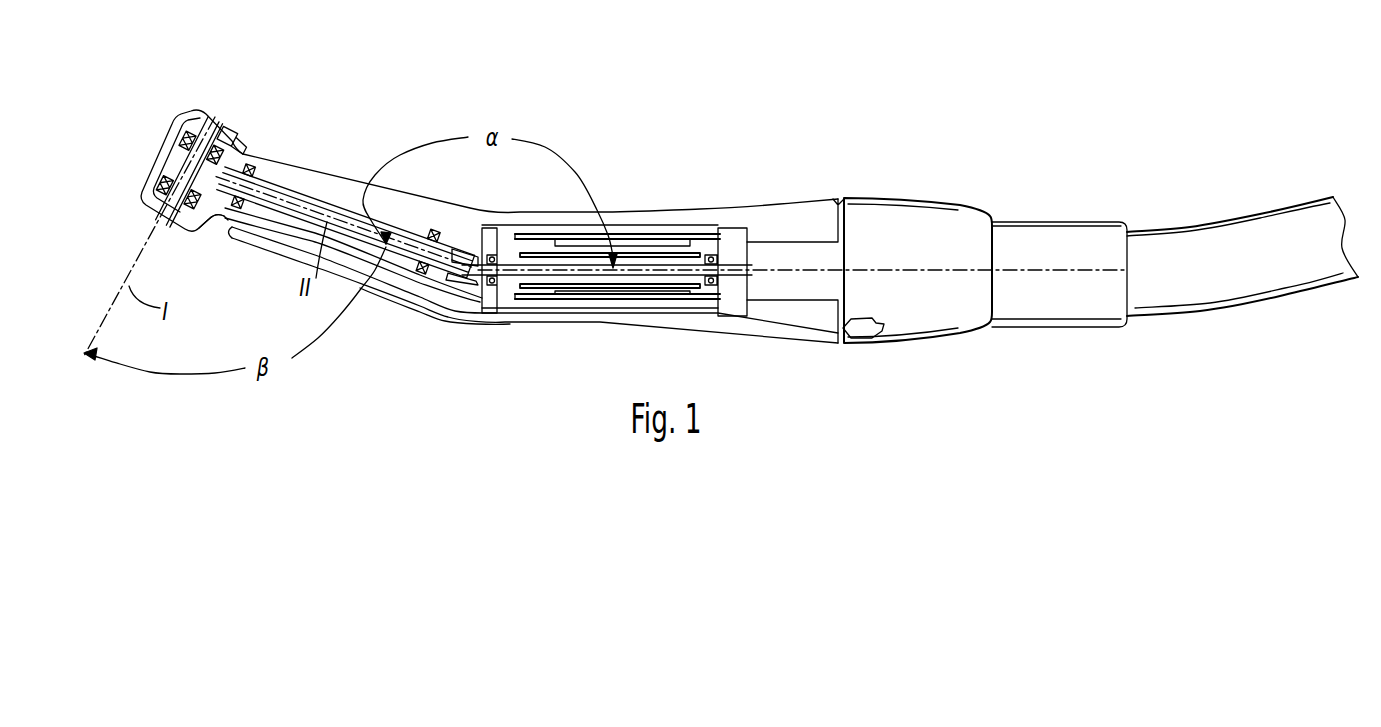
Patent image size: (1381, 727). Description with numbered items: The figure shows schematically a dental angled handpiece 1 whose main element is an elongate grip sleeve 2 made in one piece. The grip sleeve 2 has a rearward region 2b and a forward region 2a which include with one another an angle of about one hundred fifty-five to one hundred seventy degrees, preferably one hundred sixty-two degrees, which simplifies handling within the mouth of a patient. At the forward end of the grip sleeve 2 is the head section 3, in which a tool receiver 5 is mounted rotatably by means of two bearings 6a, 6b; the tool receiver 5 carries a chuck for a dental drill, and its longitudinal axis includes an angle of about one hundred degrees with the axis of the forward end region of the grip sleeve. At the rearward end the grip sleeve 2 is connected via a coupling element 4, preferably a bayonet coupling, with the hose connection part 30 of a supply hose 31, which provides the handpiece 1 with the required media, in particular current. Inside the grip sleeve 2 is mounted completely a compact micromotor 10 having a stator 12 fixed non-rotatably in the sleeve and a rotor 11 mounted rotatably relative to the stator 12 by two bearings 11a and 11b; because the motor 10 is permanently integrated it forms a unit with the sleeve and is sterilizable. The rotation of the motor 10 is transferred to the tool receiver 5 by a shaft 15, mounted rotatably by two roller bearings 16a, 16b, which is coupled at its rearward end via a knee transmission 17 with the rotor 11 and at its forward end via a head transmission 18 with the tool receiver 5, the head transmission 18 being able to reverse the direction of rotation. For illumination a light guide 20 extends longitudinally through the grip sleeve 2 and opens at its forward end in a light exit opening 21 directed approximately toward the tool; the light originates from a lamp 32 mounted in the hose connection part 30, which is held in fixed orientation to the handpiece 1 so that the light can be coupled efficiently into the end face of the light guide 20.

The dental handpiece 1 is at (696, 146).
The grip sleeve 2 is at (546, 325).
The forward region of the grip sleeve 2a is at (611, 212).
The rearward region of the grip sleeve 2b is at (357, 226).
The head section 3 is at (158, 140).
The coupling element 4 is at (773, 240).
The tool receiver 5 is at (170, 160).
The bearing 6a is at (148, 193).
The bearing 6b is at (189, 116).
The motor 10 is at (650, 240).
The rotor 11 is at (586, 290).
The bearing 11a is at (494, 322).
The bearing 11b is at (717, 315).
The stator 12 is at (548, 226).
The shaft 15 is at (287, 218).
The roller bearing 16a is at (252, 170).
The roller bearing 16b is at (425, 300).
The knee transmission 17 is at (455, 242).
The head transmission 18 is at (237, 139).
The light guide 20 is at (754, 323).
The light exit opening 21 is at (212, 222).
The hose connection part 30 is at (912, 207).
The supply hose 31 is at (1213, 232).
The lamp 32 is at (864, 334).